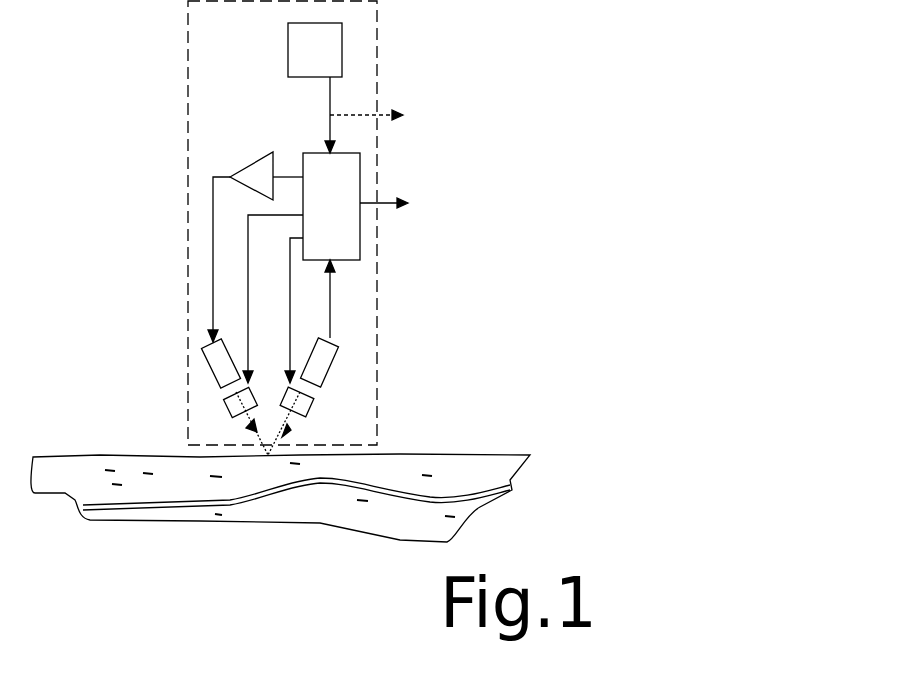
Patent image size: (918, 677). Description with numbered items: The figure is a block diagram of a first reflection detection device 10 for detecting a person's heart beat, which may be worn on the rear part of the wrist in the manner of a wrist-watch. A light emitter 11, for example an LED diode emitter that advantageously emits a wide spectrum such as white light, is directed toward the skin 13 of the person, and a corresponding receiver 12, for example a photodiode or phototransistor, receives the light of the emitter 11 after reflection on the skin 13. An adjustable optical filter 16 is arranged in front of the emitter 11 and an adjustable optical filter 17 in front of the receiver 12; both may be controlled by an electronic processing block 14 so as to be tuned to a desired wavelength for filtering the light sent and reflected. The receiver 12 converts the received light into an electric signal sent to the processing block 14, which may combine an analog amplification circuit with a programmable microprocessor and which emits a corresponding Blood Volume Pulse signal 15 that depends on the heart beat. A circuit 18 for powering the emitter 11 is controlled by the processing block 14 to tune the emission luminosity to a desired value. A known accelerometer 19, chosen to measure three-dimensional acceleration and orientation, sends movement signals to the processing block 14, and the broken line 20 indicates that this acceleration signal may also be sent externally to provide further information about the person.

The reflection detection device 10 is at (377, 18).
The light emitter 11 is at (205, 366).
The receiver 12 is at (338, 360).
The skin 13 is at (485, 465).
The electronic processing block 14 is at (360, 237).
The BVP signal 15 is at (385, 203).
The adjustable optical filter 16 is at (225, 405).
The adjustable optical filter 17 is at (315, 400).
The powering circuit 18 is at (247, 170).
The accelerometer 19 is at (342, 62).
The broken line 20 is at (384, 116).